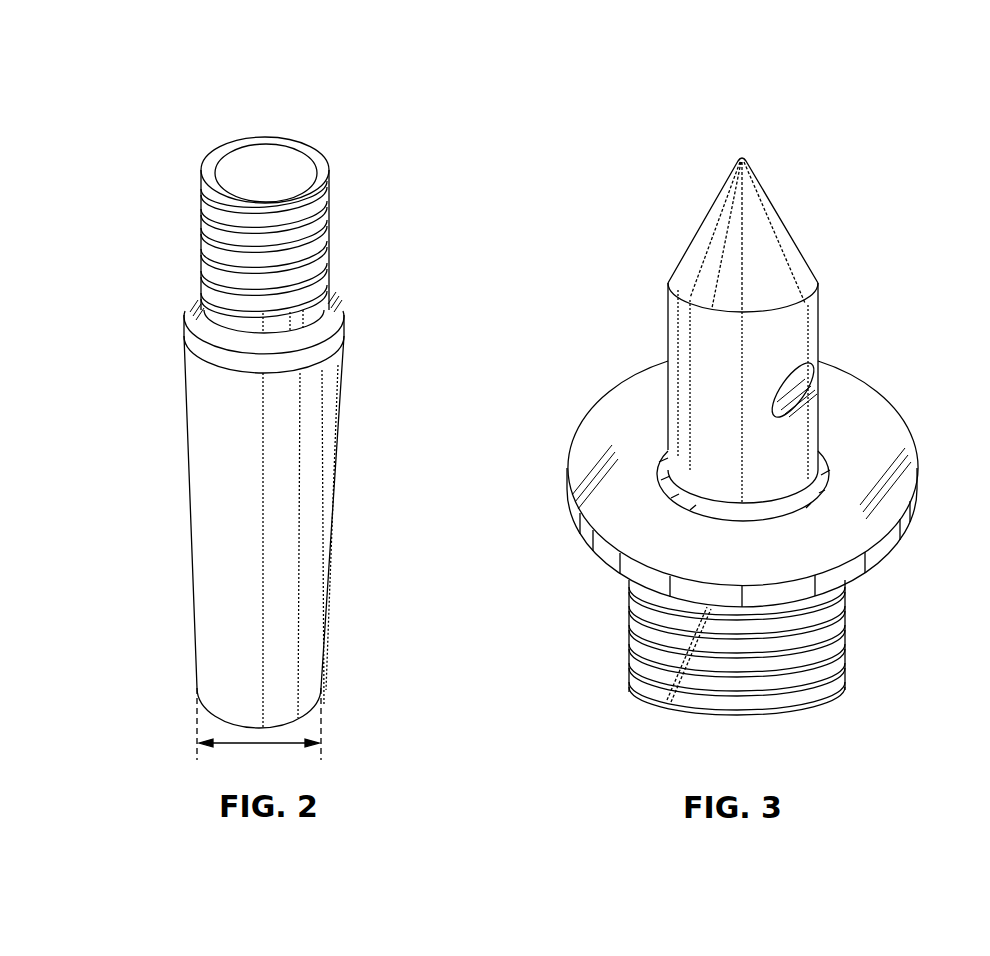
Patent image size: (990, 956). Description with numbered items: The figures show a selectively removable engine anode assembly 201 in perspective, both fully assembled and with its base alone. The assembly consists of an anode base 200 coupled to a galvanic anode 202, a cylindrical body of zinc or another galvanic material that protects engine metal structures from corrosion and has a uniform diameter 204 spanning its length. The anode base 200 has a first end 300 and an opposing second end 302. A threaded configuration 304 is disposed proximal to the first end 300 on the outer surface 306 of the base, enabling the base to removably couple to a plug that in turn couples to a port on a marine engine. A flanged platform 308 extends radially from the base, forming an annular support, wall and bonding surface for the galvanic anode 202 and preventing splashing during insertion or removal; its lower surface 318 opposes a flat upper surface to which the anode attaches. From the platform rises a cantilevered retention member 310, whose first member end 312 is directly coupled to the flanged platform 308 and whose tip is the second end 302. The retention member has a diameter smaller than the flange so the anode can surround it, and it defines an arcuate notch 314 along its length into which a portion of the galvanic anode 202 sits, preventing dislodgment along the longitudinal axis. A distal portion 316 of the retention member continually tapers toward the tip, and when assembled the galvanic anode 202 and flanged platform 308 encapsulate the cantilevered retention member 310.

In FIG. 2, the selectively removable engine anode assembly 201 is at (209, 463).
In FIG. 2, the anode base 200 is at (301, 463).
In FIG. 3, the anode base 200 is at (887, 435).
In FIG. 2, the galvanic anode 202 is at (316, 527).
In FIG. 2, the uniform diameter 204 is at (285, 744).
In FIG. 3, the first end 300 is at (751, 442).
In FIG. 3, the second end 302 is at (767, 154).
In FIG. 3, the threaded configuration 304 is at (686, 647).
In FIG. 3, the outer surface 306 is at (625, 615).
In FIG. 3, the flanged platform 308 is at (757, 481).
In FIG. 3, the cantilevered retention member 310 is at (747, 218).
In FIG. 3, the first member end 312 is at (785, 378).
In FIG. 3, the arcuate notch 314 is at (802, 381).
In FIG. 3, the distal portion 316 is at (780, 222).
In FIG. 3, the lower surface 318 is at (881, 577).